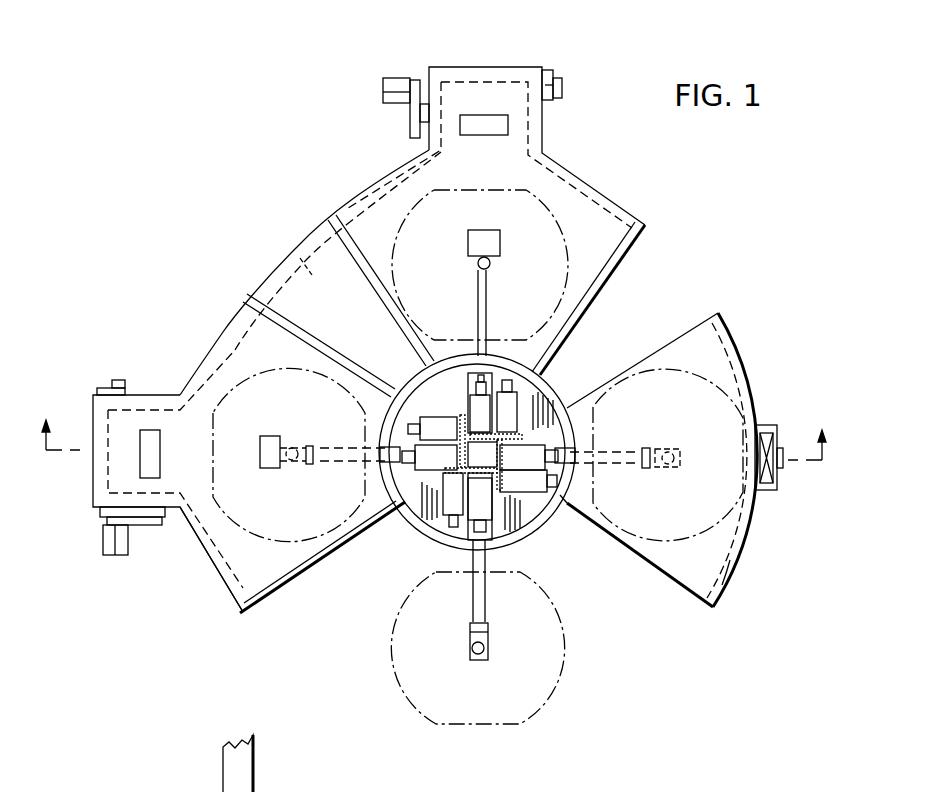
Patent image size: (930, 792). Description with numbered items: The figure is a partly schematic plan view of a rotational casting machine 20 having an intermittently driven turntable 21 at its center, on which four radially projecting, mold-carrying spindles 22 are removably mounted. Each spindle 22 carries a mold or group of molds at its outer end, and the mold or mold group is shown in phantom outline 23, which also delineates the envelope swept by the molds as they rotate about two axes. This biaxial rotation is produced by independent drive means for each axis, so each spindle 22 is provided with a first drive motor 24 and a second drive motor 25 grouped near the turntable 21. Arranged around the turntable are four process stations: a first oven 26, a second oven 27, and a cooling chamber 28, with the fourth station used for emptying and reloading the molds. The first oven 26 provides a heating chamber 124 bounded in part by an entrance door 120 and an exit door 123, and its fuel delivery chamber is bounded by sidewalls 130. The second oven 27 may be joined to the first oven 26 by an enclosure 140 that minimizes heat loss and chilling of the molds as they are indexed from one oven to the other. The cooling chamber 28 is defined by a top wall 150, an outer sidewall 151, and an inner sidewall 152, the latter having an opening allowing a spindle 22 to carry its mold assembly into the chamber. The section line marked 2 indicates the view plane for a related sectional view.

The section line 2- 2 is at (434, 462).
The rotational casting machine 20 is at (643, 255).
The turntable 21 is at (447, 528).
The spindle 22 is at (381, 522).
The phantom outline of mold or mold group 23 is at (566, 640).
The first drive motor 24 is at (452, 420).
The second drive motor 25 is at (480, 405).
The first oven 26 is at (212, 572).
The second oven 27 is at (353, 196).
The cooling chamber 28 is at (743, 357).
The entrance door 120 is at (341, 225).
The exit door 123 is at (253, 300).
The heating chamber 124 is at (232, 357).
The sidewalls 130 is at (148, 394).
The enclosure 140 is at (307, 268).
The top wall 150 is at (722, 568).
The outer sidewall 151 is at (747, 530).
The inner sidewall 152 is at (553, 504).